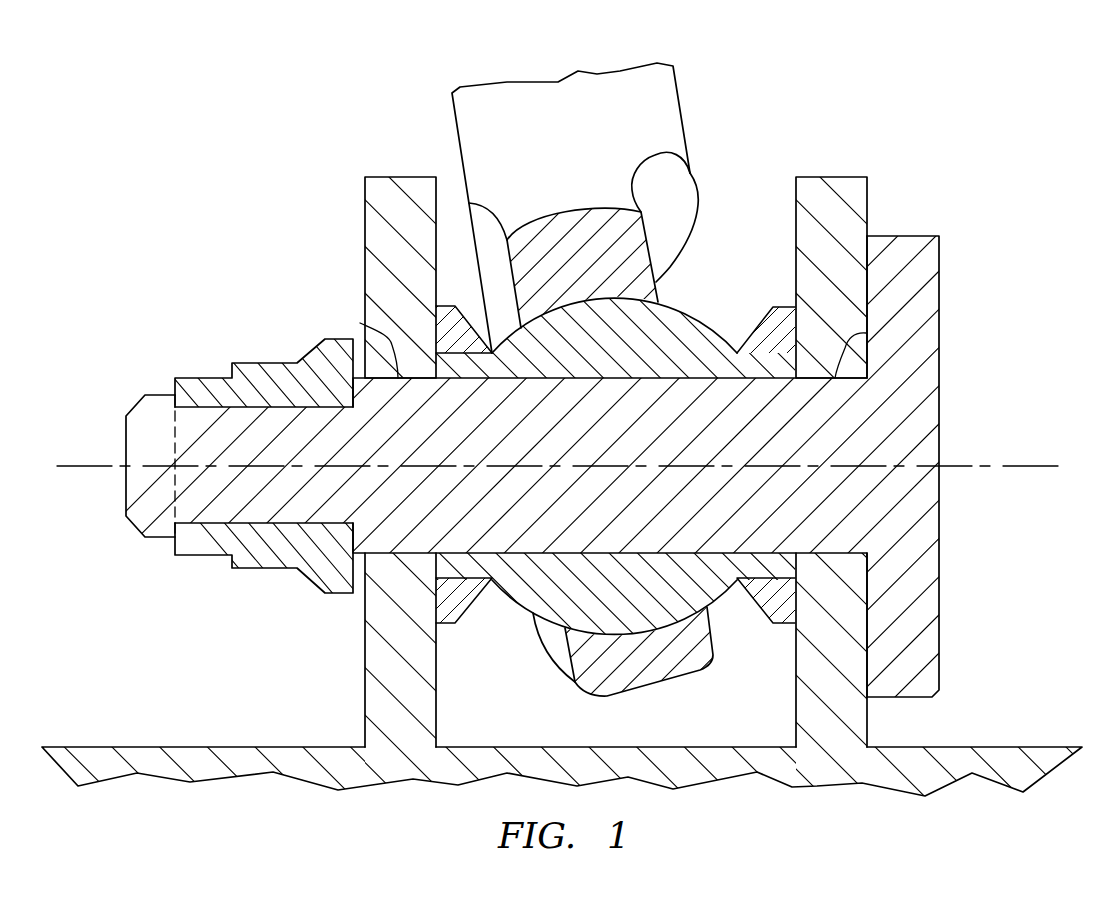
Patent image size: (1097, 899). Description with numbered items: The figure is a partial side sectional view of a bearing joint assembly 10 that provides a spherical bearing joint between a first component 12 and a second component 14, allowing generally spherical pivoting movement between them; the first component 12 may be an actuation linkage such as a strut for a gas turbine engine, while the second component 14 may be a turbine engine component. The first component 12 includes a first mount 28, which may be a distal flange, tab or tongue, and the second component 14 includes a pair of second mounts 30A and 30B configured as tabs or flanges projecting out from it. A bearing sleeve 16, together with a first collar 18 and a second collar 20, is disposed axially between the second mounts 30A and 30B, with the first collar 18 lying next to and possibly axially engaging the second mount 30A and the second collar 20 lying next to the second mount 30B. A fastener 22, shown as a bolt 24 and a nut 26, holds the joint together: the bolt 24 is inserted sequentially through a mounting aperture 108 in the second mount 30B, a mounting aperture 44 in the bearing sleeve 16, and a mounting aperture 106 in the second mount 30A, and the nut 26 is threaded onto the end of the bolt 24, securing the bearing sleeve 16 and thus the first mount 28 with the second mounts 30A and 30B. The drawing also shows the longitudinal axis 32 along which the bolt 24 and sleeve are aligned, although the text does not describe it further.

The bearing joint assembly 10 is at (1012, 72).
The first component 12 is at (696, 85).
The second component 14 is at (92, 728).
The bearing sleeve 16 is at (521, 623).
The first collar 18 is at (455, 636).
The second collar 20 is at (763, 633).
The fastener 22 is at (548, 466).
The bolt 24 is at (940, 510).
The nut 26 is at (232, 570).
The first mount 28 is at (663, 287).
The second mount 30A is at (399, 168).
The second mount 30B is at (831, 168).
The longitudinal axis 32 is at (1020, 456).
The mounting aperture 44 is at (702, 362).
The mounting aperture 106 is at (360, 323).
The mounting aperture 108 is at (866, 333).